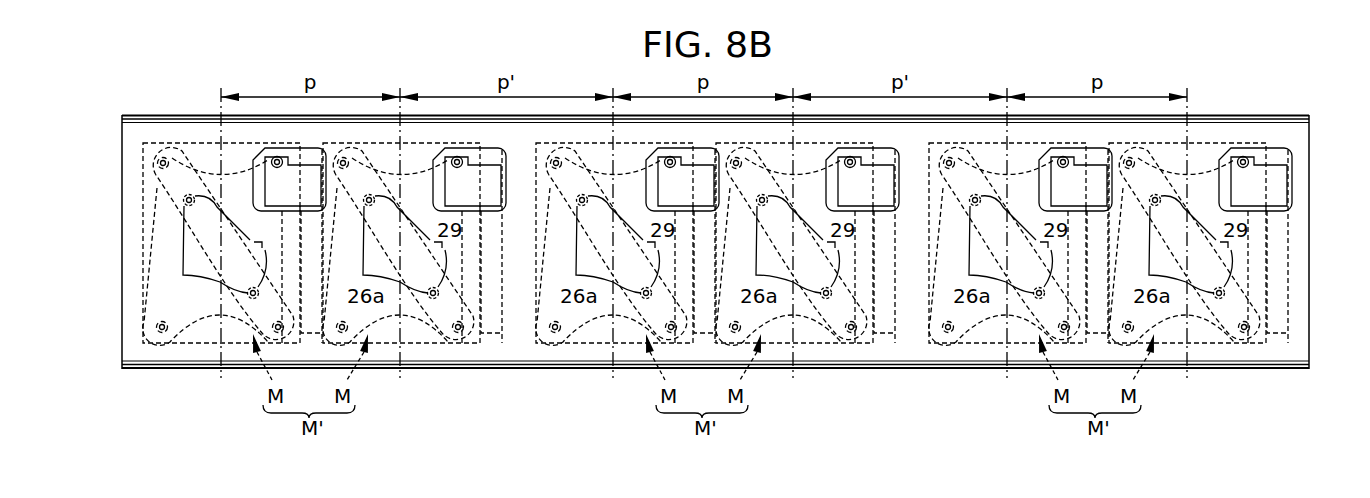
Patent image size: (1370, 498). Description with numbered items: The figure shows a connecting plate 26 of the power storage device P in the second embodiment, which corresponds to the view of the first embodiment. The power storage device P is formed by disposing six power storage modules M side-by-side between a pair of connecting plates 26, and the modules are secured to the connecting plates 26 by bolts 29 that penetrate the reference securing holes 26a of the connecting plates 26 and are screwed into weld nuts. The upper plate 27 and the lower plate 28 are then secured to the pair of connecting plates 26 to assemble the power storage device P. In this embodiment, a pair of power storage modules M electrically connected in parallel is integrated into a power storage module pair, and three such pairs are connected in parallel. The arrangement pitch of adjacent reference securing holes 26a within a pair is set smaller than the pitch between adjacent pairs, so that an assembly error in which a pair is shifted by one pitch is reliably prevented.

The connecting plate 26 is at (1265, 104).
The reference securing hole 26a is at (216, 252).
The upper plate 27 is at (1208, 116).
The lower plate 28 is at (1217, 369).
The bolt 29 is at (289, 195).
The power storage device P is at (963, 66).
The power storage module M is at (310, 387).